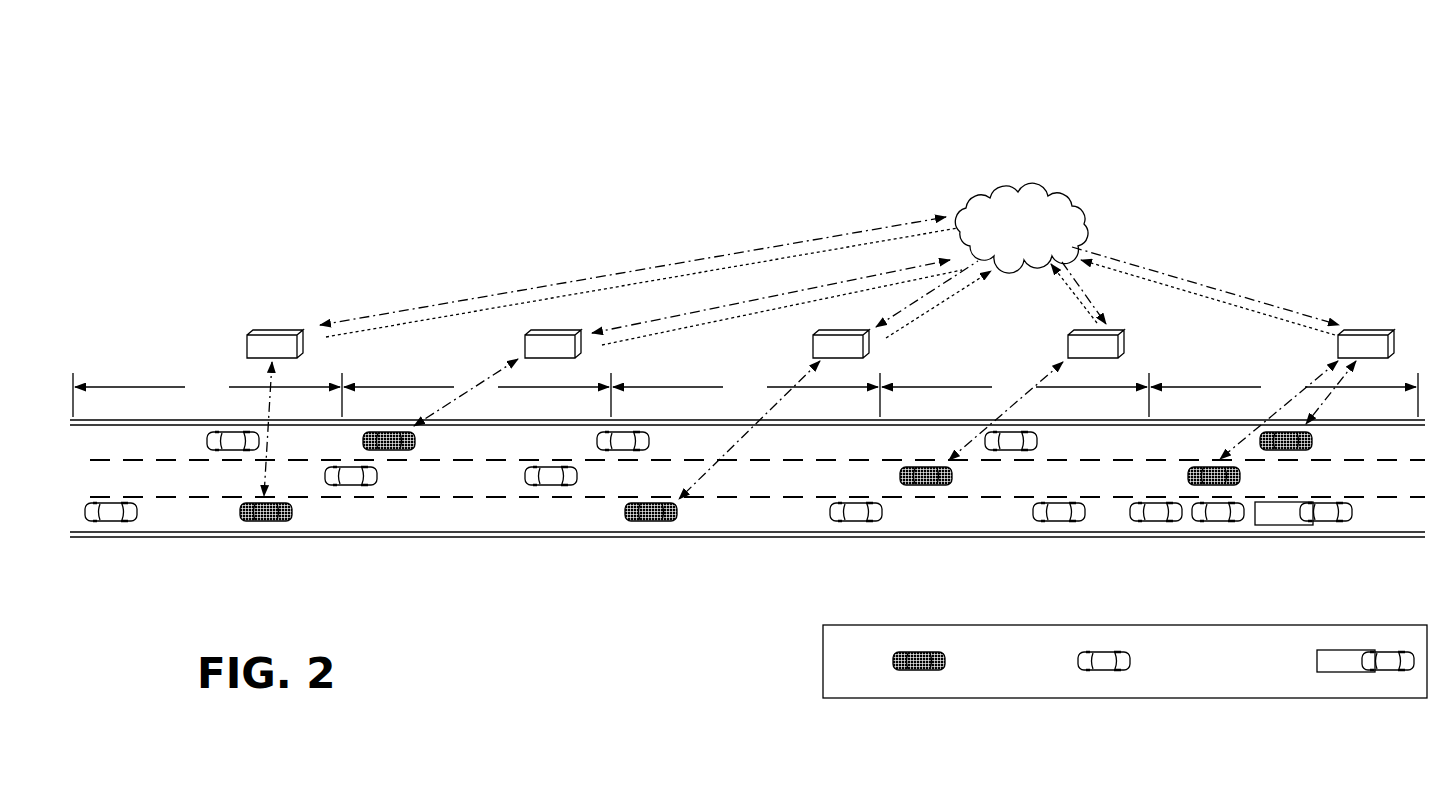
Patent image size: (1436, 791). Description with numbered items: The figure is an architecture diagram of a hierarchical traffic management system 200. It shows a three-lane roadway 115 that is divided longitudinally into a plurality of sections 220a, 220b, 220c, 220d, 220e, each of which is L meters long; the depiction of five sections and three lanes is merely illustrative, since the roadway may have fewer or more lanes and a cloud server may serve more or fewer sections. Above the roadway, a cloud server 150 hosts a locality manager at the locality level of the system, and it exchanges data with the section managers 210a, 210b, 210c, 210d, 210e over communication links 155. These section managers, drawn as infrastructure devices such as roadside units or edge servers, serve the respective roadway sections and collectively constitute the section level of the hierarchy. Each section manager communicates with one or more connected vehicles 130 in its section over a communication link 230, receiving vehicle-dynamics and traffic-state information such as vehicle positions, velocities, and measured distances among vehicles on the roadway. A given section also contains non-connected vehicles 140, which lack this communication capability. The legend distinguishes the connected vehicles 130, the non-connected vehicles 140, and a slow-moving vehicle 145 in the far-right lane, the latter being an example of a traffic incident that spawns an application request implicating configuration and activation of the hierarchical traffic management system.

The hierarchical traffic management system 200 is at (918, 113).
The cloud server 150 is at (1068, 191).
The communication link 155 is at (788, 233).
The section manager 210a is at (281, 330).
The section manager 210b is at (551, 332).
The section manager 210c is at (833, 332).
The section manager 210d is at (1127, 347).
The section manager 210e is at (1366, 332).
The roadway section 220a is at (130, 385).
The roadway section 220b is at (416, 385).
The roadway section 220c is at (676, 385).
The roadway section 220d is at (940, 385).
The roadway section 220e is at (1204, 384).
The roadway 115 is at (415, 515).
The communication link 230 is at (707, 472).
The connected vehicle 130 is at (915, 672).
The non-connected vehicle 140 is at (1100, 672).
The slow-moving vehicle 145 is at (1350, 672).